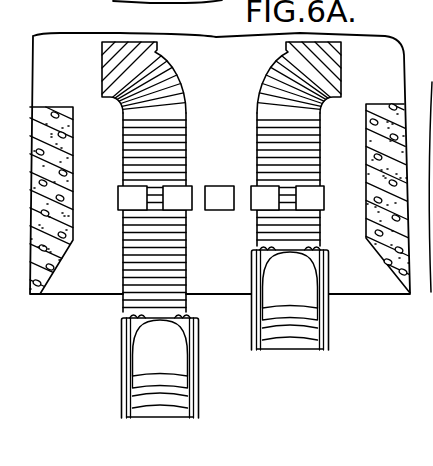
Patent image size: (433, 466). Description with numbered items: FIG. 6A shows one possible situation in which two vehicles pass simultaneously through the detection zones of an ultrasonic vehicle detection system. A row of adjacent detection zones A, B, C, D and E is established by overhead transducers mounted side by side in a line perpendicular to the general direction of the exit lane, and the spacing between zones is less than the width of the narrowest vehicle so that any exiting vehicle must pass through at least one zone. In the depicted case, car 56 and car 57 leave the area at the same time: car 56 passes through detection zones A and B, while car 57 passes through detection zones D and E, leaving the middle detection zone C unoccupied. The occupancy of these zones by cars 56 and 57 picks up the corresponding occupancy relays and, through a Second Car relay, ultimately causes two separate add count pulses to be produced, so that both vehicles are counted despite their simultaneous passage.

The car 56 is at (122, 353).
The car 57 is at (330, 327).
The detection zone A is at (132, 198).
The detection zone B is at (177, 198).
The detection zone C is at (219, 198).
The detection zone D is at (265, 198).
The detection zone E is at (310, 198).